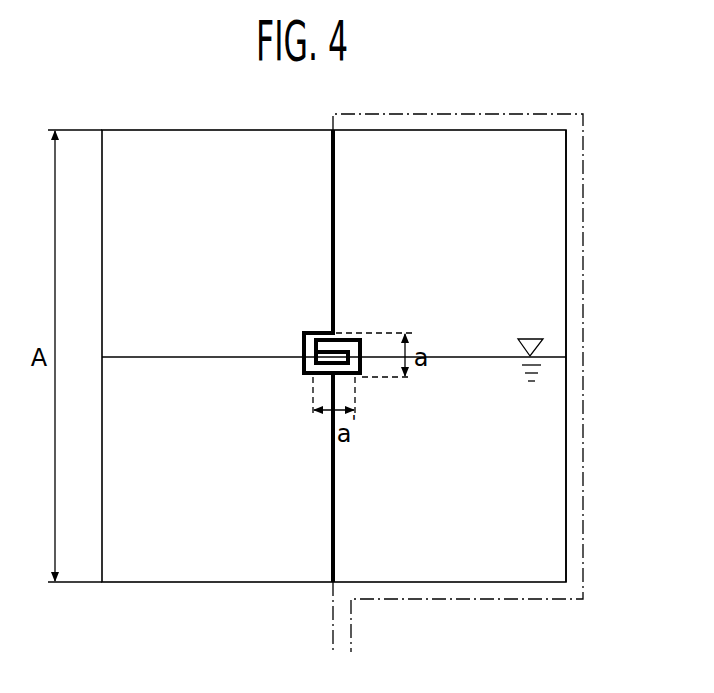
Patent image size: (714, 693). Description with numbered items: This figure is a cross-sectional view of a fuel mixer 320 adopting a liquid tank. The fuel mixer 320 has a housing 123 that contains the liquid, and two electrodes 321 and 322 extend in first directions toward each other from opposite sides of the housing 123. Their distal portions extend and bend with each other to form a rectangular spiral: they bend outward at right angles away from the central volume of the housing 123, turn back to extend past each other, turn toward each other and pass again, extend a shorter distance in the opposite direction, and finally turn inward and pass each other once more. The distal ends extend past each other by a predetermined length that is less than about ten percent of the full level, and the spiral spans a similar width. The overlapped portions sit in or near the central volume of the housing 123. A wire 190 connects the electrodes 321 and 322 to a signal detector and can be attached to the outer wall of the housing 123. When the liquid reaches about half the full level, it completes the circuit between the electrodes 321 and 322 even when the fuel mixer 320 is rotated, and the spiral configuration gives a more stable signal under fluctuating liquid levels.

The fuel mixer 320 is at (575, 68).
The electrode 321 is at (335, 228).
The electrode 322 is at (335, 492).
The housing 123 is at (566, 198).
The wire 190 is at (583, 322).